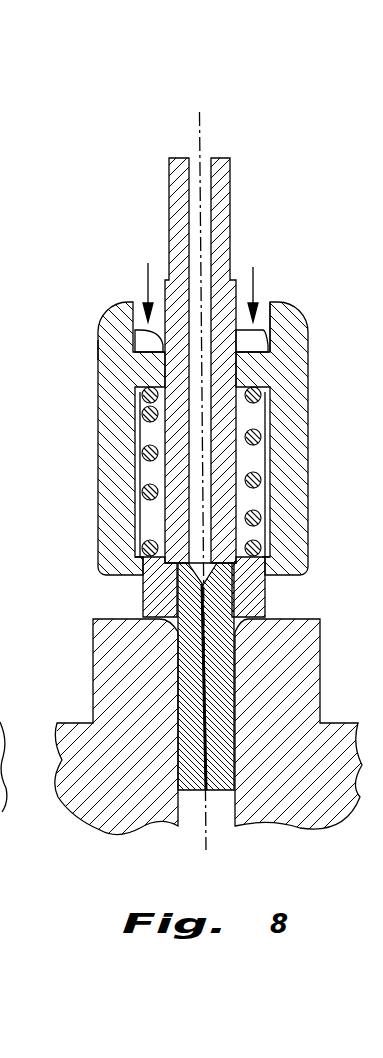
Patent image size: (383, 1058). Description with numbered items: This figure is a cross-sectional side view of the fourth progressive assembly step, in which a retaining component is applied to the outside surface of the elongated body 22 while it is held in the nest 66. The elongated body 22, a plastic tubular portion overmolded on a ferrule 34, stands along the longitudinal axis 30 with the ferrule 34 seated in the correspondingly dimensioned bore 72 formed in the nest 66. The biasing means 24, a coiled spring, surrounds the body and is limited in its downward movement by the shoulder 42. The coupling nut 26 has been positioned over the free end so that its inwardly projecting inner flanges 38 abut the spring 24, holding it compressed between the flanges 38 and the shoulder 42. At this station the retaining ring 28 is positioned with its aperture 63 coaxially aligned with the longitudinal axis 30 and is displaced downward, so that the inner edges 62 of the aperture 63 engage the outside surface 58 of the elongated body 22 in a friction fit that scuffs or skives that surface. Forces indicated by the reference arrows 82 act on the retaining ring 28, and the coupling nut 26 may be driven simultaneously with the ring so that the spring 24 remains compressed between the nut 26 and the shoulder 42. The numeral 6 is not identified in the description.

The valve assembly 6 is at (49, 353).
The elongated body 22 is at (138, 431).
The biasing means 24 is at (134, 468).
The coupling nut 26 is at (90, 347).
The retaining ring 28 is at (274, 303).
The longitudinal axis 30 is at (200, 112).
The ferrule 34 is at (240, 630).
The inner flanges 38 is at (262, 373).
The shoulder 42 is at (143, 612).
The outside surface 58 is at (134, 545).
The inner edges 62 is at (118, 330).
The aperture 63 is at (216, 340).
The nest 66 is at (113, 682).
The bore 72 is at (208, 828).
The reference arrows 82 is at (257, 278).